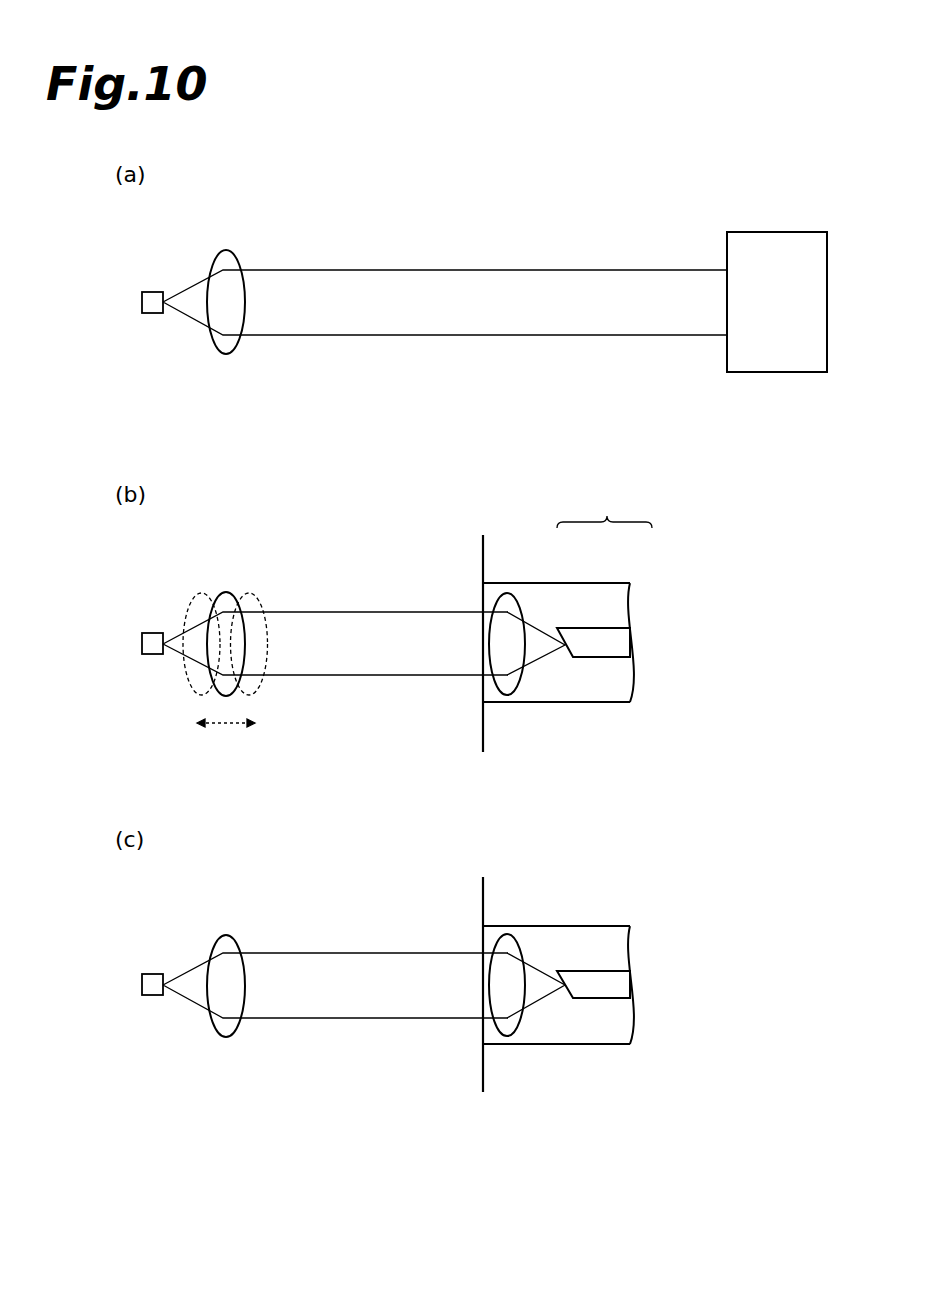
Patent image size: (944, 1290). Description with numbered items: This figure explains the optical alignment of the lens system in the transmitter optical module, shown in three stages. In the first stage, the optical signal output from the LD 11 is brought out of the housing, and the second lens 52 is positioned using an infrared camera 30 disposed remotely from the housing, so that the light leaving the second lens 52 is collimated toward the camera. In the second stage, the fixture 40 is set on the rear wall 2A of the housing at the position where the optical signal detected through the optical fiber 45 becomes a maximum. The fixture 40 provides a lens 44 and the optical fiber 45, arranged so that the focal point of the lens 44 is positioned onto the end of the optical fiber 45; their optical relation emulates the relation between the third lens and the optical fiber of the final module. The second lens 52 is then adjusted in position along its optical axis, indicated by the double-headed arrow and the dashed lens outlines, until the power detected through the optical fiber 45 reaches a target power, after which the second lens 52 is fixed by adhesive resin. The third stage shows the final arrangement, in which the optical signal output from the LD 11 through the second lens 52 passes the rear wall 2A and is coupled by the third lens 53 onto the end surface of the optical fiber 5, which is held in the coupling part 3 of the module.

The LD 11 is at (152, 297).
The second lens 52 is at (228, 259).
The infrared camera 30 is at (775, 247).
The rear wall 2A is at (483, 562).
The fixture 40 is at (604, 509).
The lens 44 is at (507, 600).
The optical fiber 45 is at (585, 638).
The third lens 53 is at (507, 940).
The optical fiber 5 is at (585, 975).
The housing 3 is at (615, 935).